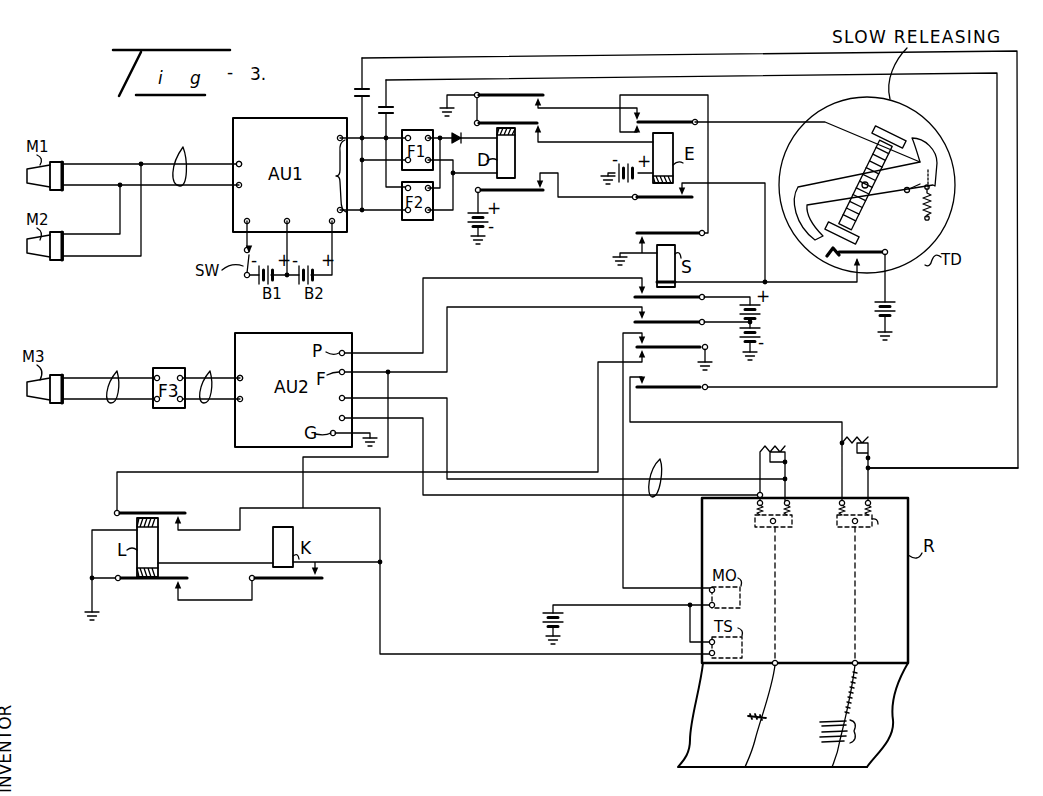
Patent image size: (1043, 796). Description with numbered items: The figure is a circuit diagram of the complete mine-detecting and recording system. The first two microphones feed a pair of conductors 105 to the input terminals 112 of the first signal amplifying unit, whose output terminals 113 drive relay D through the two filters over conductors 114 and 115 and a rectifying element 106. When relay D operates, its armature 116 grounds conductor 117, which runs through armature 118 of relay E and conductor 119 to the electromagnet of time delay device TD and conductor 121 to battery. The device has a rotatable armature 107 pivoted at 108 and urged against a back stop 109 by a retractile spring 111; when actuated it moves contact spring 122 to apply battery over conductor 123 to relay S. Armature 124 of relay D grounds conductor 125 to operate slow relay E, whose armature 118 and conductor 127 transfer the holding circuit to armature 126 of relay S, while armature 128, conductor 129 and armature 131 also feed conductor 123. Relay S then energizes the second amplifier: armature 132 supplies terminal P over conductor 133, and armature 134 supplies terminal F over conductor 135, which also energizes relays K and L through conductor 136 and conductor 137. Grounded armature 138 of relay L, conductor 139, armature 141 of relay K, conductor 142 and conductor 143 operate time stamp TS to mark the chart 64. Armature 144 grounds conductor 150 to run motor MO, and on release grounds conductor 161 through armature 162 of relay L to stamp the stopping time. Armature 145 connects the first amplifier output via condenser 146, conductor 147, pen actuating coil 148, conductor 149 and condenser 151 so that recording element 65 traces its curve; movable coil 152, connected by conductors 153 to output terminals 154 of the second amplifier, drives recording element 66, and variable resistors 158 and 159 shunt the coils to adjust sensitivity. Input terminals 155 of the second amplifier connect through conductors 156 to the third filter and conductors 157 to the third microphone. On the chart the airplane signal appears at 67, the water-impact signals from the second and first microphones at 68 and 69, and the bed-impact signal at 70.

The chart 64 is at (703, 687).
The recording element 65 is at (856, 662).
The recording element 66 is at (776, 660).
The airplane signal 67 is at (865, 732).
The microphone M2 signal 68 is at (822, 736).
The microphone M1 signal 69 is at (822, 724).
The microphone M3 signal 70 is at (747, 706).
The pair of conductors 105 is at (188, 157).
The current rectifying element 106 is at (449, 132).
The rotatable armature 107 is at (920, 137).
The pivot 108 is at (861, 182).
The back stop 109 is at (905, 193).
The retractile spring 111 is at (930, 200).
The input terminals 112 is at (243, 161).
The output terminals 113 is at (327, 176).
The conductor 114 is at (352, 104).
The conductor 115 is at (362, 216).
The armature of relay D 116 is at (533, 93).
The conductor 117 is at (565, 108).
The armature of relay E 118 is at (650, 120).
The conductor 119 is at (736, 120).
The conductor 121 is at (889, 284).
The contact spring 122 is at (825, 266).
The conductor 123 is at (763, 246).
The armature of relay D 124 is at (545, 123).
The conductor 125 is at (606, 150).
The armature of relay S 126 is at (658, 231).
The conductor 127 is at (709, 152).
The armature of relay D 128 is at (506, 199).
The conductor 129 is at (612, 199).
The armature of relay E 131 is at (658, 199).
The armature of relay S 132 is at (652, 301).
The conductor 133 is at (497, 279).
The armature of relay S 134 is at (652, 326).
The conductor 135 is at (505, 307).
The conductor 136 is at (207, 563).
The conductor 137 is at (92, 548).
The armature of relay L 138 is at (152, 584).
The conductor 139 is at (200, 602).
The armature of relay K 141 is at (290, 586).
The conductor 142 is at (403, 656).
The conductor 143 is at (630, 607).
The armature of relay S 144 is at (652, 352).
The armature of relay S 145 is at (654, 392).
The condenser 146 is at (390, 107).
The conductor 147 is at (785, 74).
The pen actuating coil 148 is at (885, 527).
The conductor 149 is at (945, 470).
The conductor 150 is at (623, 535).
The condenser 151 is at (352, 86).
The movable coil 152 is at (760, 528).
The pair of conductors 153 is at (552, 458).
The output terminals 154 is at (340, 399).
The input terminals 155 is at (243, 392).
The conductors 156 is at (210, 375).
The conductors 157 is at (110, 375).
The variable resistor 158 is at (858, 440).
The variable resistor 159 is at (766, 449).
The conductor 161 is at (598, 446).
The armature of relay L 162 is at (137, 508).